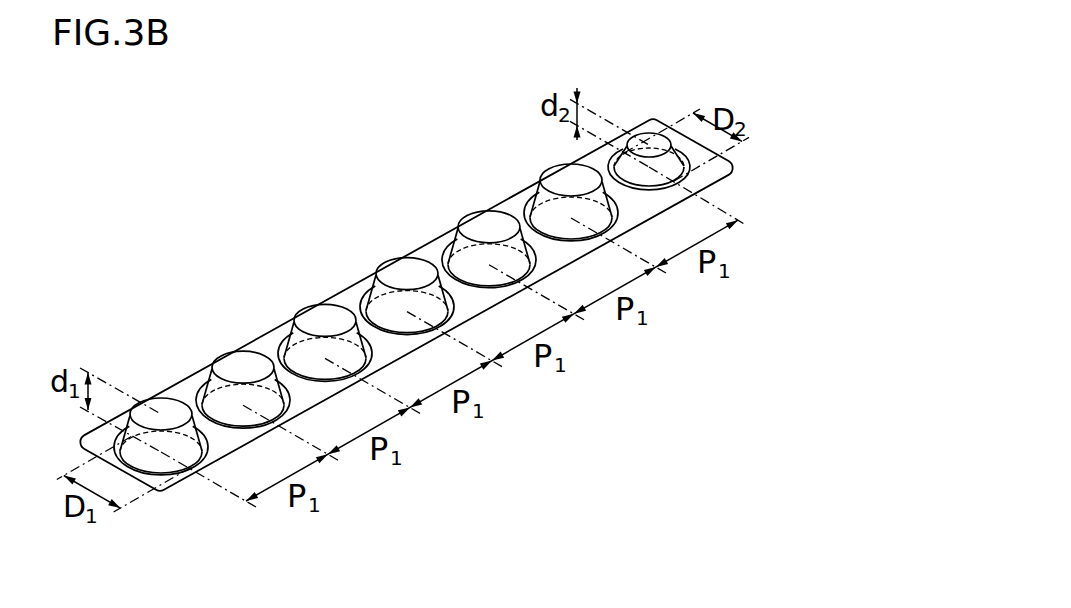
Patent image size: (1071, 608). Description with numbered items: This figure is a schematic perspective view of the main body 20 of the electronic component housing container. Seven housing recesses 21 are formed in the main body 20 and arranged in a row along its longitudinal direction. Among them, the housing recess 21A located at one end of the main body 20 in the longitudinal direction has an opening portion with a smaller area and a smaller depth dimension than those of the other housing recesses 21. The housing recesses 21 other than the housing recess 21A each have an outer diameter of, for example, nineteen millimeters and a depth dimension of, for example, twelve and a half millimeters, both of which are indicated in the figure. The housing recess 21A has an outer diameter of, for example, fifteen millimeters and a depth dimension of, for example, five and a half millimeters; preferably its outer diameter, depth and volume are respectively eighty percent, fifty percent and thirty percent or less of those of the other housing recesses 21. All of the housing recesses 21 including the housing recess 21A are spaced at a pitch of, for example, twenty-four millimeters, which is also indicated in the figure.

The main body 20 is at (282, 257).
The housing recess 21 is at (242, 363).
The housing recess 21A is at (650, 141).